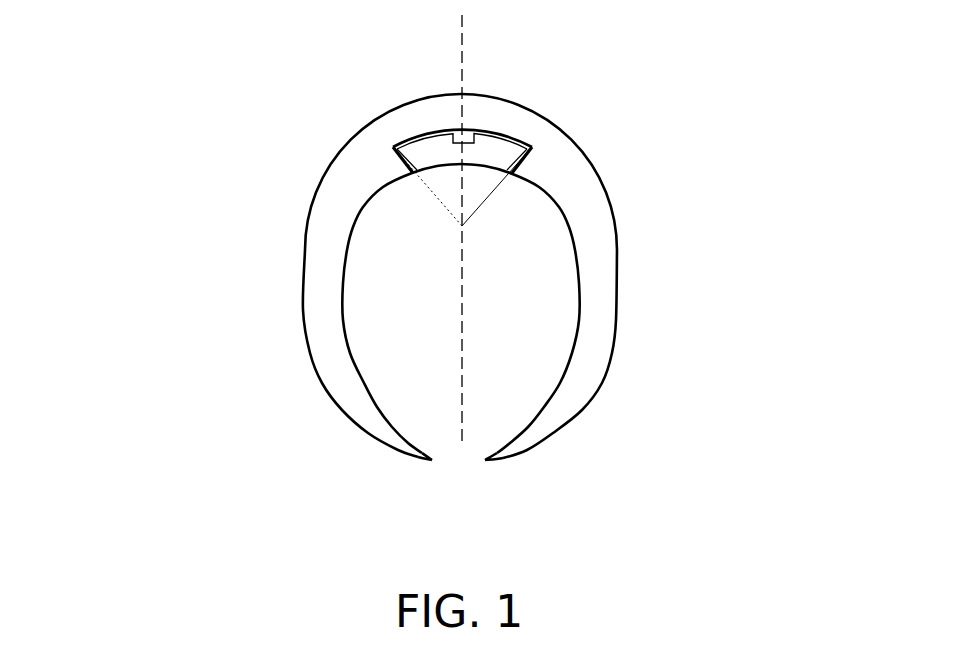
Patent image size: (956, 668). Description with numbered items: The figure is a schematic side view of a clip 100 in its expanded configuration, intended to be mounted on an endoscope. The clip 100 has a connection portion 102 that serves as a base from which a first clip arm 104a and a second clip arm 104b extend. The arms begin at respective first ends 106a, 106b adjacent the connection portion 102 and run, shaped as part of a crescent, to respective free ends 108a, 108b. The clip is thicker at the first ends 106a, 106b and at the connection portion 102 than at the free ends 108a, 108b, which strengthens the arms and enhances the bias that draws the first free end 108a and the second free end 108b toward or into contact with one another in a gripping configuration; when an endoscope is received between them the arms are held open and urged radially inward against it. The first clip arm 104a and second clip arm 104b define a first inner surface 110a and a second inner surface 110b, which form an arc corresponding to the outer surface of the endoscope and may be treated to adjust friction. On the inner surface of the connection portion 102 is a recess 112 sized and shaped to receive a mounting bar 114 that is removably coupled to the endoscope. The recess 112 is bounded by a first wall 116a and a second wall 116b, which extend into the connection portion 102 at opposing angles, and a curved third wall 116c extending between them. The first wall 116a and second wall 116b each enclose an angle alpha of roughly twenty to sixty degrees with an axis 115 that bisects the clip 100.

The clip 100 is at (96, 140).
The connection portion 102 is at (462, 93).
The first clip arm 104a is at (303, 270).
The second clip arm 104b is at (605, 285).
The first end of first clip arm 106a is at (360, 137).
The first end of second clip arm 106b is at (555, 127).
The first free end 108a is at (430, 462).
The second free end 108b is at (487, 462).
The first inner surface 110a is at (345, 296).
The second inner surface 110b is at (576, 308).
The recess 112 is at (393, 147).
The mounting bar 114 is at (435, 148).
The axis 115 is at (478, 229).
The first wall 116a is at (393, 147).
The second wall 116b is at (532, 147).
The third wall 116c is at (493, 130).